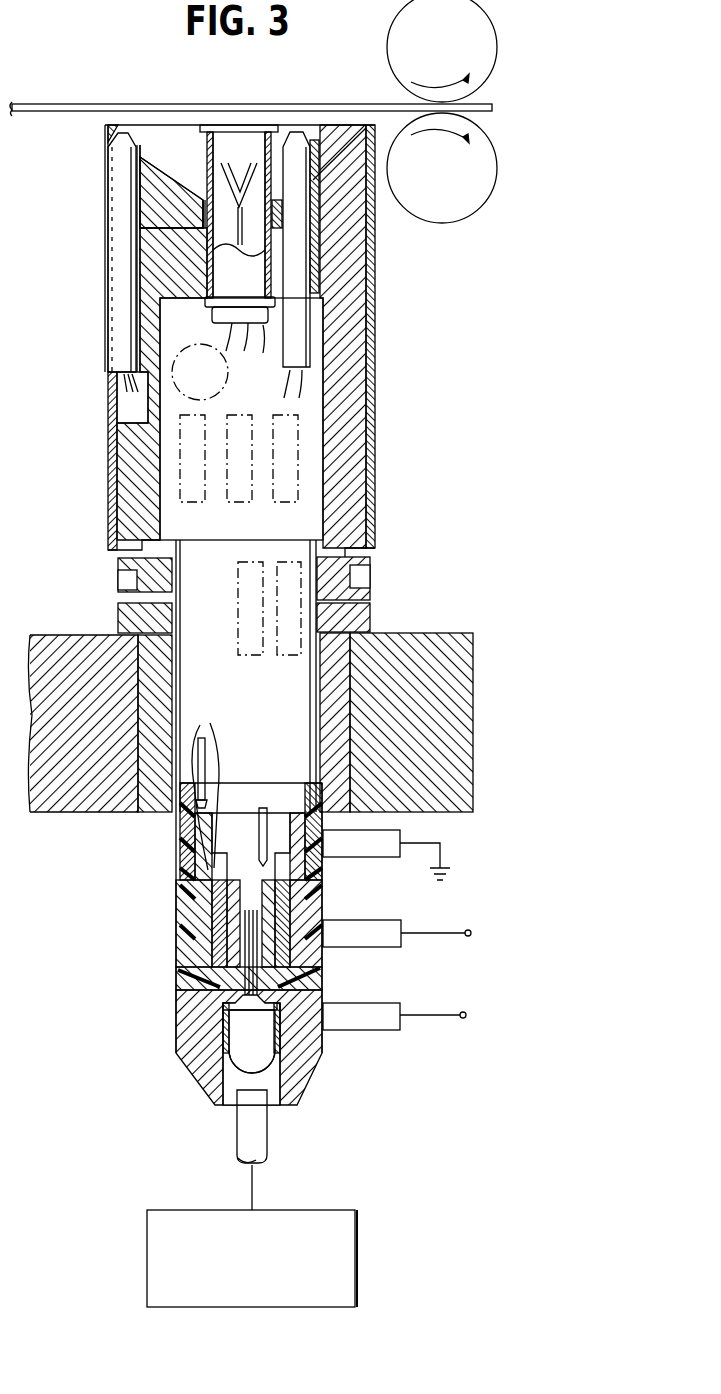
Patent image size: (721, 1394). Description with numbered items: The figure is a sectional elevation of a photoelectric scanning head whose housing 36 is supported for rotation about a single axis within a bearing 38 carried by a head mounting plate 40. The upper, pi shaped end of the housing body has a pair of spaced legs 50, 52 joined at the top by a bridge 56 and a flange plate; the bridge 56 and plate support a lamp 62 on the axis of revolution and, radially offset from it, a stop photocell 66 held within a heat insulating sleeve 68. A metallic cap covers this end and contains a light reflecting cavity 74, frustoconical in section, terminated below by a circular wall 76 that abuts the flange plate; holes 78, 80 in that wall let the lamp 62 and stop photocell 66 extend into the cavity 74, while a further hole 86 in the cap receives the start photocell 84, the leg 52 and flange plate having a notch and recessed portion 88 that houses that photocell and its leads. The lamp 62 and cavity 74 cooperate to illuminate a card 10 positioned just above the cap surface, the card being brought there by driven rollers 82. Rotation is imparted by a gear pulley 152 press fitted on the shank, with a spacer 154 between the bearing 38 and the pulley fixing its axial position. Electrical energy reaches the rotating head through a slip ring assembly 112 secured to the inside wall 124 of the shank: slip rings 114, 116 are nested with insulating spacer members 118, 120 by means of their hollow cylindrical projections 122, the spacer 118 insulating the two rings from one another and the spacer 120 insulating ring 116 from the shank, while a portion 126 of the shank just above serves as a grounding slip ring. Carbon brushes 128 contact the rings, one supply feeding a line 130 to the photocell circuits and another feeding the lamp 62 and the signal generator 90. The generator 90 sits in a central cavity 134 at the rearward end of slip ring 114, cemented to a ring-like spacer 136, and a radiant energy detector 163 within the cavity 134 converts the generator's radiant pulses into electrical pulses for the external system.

The card 10 is at (197, 105).
The driven rollers 82 is at (384, 24).
The leg 50 is at (345, 421).
The leg 52 is at (125, 465).
The hole 86 is at (118, 125).
The start photocell 84 is at (120, 266).
The notch and recessed portion 88 is at (130, 405).
The light reflecting cavity 74 is at (140, 158).
The circular wall 76 is at (162, 200).
The hole 78 is at (203, 198).
The lamp 62 is at (202, 130).
The sleeve 68 is at (281, 323).
The hole 80 is at (278, 202).
The stop photocell 66 is at (312, 145).
The bridge 56 is at (190, 298).
The housing 36 is at (97, 539).
The gear pulley 152 is at (370, 561).
The spacer 154 is at (370, 613).
The inside wall 124 is at (180, 668).
The head mounting plate 40 is at (95, 812).
The bearing 38 is at (155, 812).
The cylindrical projection 122 is at (205, 749).
The spacer member 120 is at (322, 885).
The slip ring portion of the shank 126 is at (322, 872).
The line 130 is at (263, 808).
The slip ring 116 is at (319, 916).
The spacer member 118 is at (322, 972).
The slip ring 114 is at (317, 1071).
The cavity 134 is at (225, 1103).
The signal generator 90 is at (230, 1061).
The ring-like spacer 136 is at (273, 1106).
The radiant energy detector 163 is at (236, 1161).
The brushes 128 is at (395, 834).
The slip ring assembly 112 is at (160, 950).